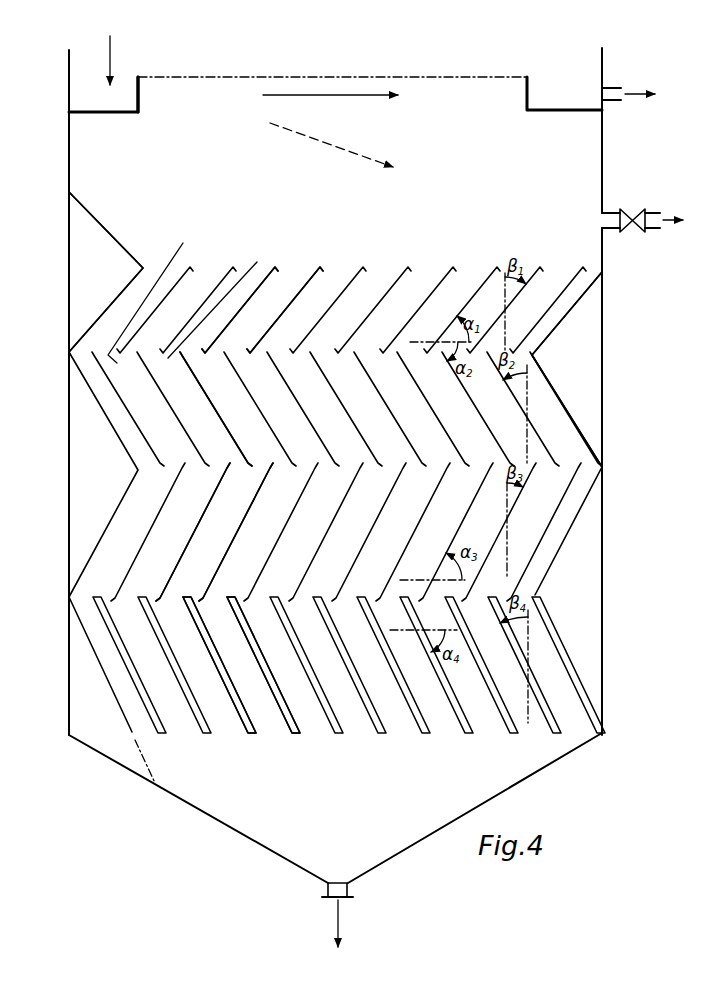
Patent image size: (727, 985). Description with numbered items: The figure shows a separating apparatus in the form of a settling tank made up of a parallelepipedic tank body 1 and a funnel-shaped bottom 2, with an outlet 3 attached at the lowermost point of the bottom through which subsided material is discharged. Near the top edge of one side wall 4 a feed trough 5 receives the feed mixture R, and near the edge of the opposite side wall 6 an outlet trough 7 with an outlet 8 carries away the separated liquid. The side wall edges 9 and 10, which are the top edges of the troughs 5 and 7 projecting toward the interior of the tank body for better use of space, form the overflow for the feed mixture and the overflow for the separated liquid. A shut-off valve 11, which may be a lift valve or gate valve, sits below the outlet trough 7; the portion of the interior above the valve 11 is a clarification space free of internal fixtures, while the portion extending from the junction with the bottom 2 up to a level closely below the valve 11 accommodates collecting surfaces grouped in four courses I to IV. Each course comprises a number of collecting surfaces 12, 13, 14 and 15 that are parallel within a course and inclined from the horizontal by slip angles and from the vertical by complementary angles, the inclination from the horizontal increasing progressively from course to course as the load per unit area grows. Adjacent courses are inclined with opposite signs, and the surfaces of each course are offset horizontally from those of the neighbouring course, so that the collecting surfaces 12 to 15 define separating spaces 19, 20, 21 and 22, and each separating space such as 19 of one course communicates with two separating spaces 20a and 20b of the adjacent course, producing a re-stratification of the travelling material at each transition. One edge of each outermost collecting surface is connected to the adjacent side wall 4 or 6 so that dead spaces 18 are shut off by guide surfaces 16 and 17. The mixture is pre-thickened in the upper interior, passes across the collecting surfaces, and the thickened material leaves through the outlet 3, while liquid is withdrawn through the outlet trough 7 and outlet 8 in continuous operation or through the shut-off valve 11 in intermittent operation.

The tank body 1 is at (118, 150).
The funnel-shaped bottom 2 is at (335, 808).
The outlet 3 is at (337, 930).
The side wall 4 is at (69, 299).
The feed trough 5 is at (96, 93).
The side wall 6 is at (602, 415).
The outlet trough 7 is at (575, 95).
The outlet 8 is at (650, 98).
The side wall edge 9 is at (140, 77).
The side wall edge 10 is at (527, 77).
The shut-off valve 11 is at (632, 207).
The collecting surfaces 12 is at (222, 283).
The collecting surfaces 13 is at (165, 403).
The collecting surfaces 14 is at (152, 528).
The collecting surfaces 15 is at (115, 655).
The guide surface 16 is at (105, 233).
The guide surface 17 is at (582, 303).
The dead spaces 18 is at (335, 464).
The separating space 19 is at (239, 310).
The separating space 20 is at (183, 398).
The separating space 20a is at (149, 293).
The separating space 20b is at (257, 262).
The separating space 21 is at (211, 532).
The separating space 22 is at (195, 680).